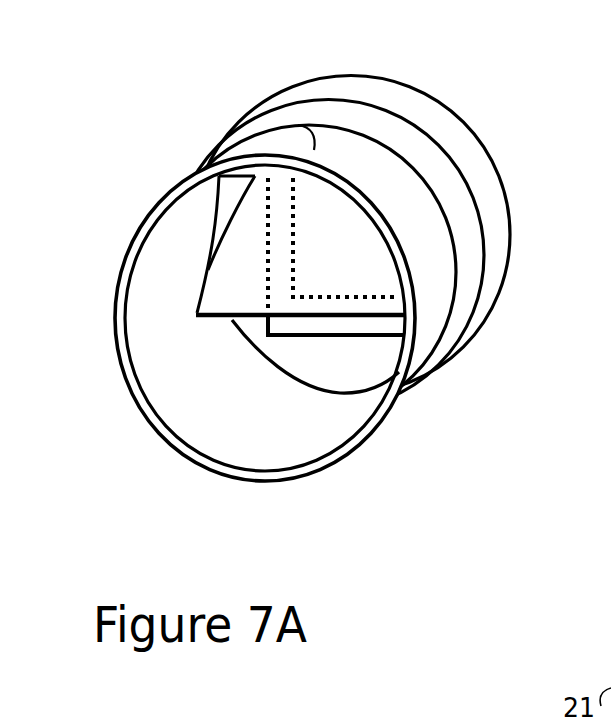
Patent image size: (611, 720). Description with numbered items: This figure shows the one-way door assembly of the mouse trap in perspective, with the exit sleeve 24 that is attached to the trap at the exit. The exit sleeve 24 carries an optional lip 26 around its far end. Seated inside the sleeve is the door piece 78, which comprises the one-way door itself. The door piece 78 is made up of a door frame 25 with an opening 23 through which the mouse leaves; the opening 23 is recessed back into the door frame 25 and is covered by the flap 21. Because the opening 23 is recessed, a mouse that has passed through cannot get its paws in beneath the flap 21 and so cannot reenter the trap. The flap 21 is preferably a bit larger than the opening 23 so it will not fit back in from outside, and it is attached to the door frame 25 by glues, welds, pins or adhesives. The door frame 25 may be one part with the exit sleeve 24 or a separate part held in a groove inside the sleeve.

The flap 21 is at (232, 318).
The opening 23 is at (360, 280).
The exit sleeve 24 is at (212, 150).
The door frame 25 is at (310, 338).
The lip 26 is at (496, 232).
The door piece 78 is at (312, 390).